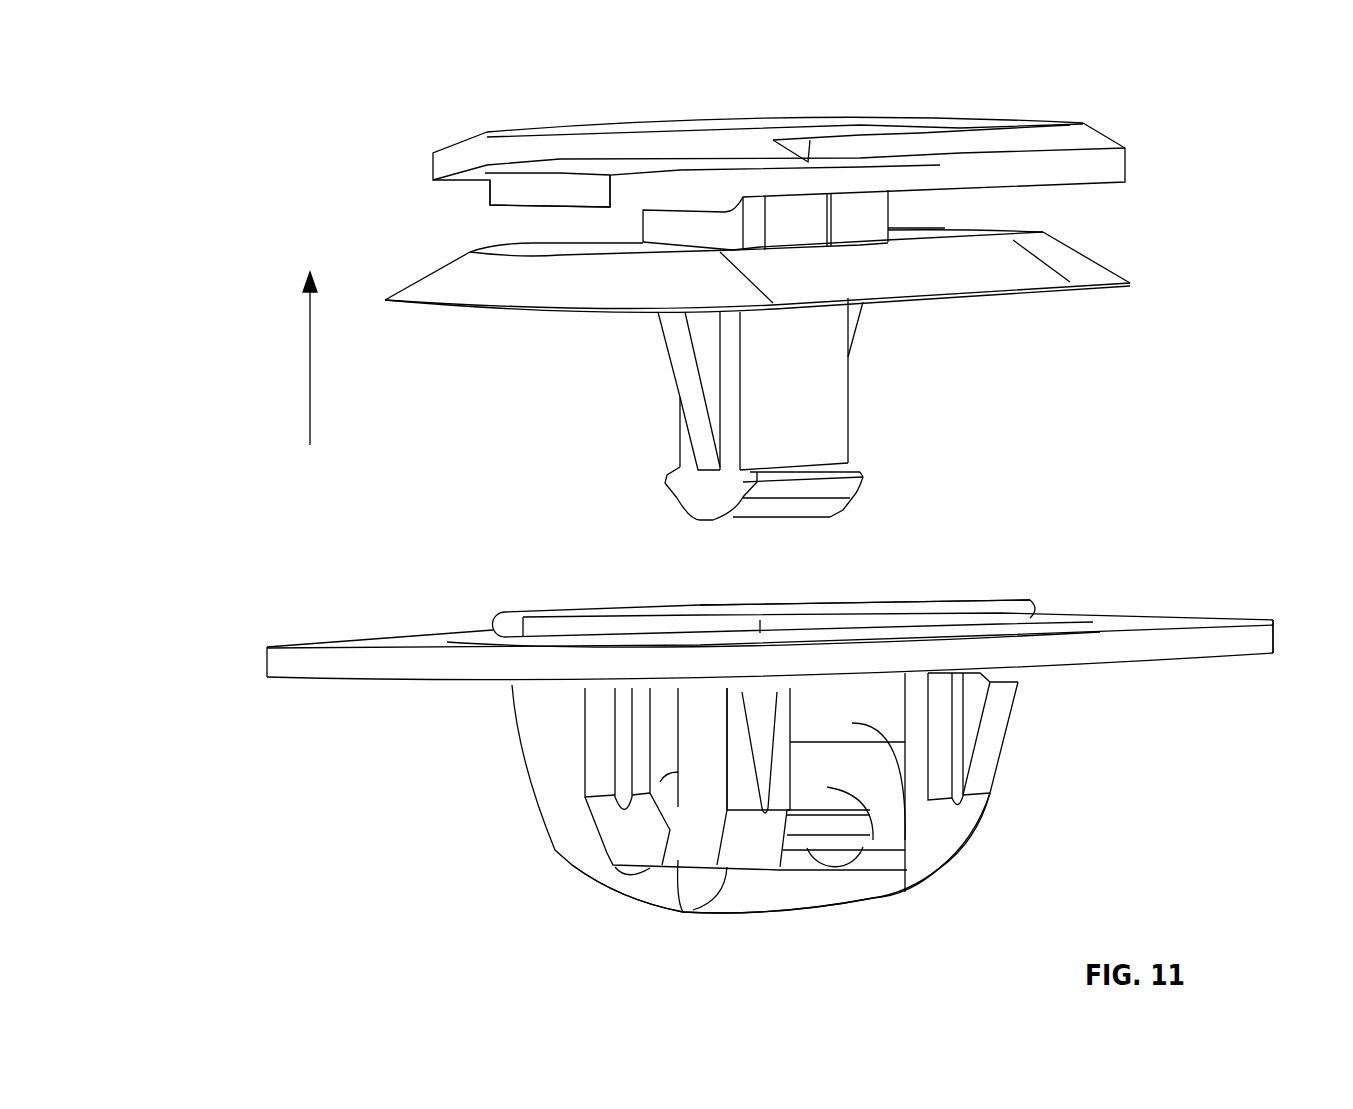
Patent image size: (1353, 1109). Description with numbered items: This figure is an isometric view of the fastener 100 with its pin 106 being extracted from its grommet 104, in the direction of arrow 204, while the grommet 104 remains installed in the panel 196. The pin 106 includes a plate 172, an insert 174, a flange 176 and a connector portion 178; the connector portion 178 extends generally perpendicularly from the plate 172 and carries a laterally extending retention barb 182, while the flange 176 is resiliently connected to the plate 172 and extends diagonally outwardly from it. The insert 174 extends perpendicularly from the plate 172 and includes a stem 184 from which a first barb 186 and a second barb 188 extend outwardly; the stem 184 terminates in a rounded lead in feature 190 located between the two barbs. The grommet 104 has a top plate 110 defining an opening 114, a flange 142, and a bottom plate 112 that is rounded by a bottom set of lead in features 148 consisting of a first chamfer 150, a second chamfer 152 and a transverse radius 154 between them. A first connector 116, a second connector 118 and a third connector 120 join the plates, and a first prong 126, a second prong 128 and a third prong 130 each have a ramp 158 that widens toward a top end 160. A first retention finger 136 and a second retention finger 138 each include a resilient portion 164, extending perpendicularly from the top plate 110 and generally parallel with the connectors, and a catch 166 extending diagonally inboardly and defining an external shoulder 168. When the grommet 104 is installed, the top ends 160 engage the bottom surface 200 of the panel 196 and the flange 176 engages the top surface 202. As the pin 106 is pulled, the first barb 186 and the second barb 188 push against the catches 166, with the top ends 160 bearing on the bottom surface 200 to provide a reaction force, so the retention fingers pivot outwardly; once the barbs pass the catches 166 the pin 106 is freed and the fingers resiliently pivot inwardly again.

The fastener 100 is at (268, 100).
The arrow 204 is at (305, 350).
The pin 106 is at (1113, 167).
The retention barb 182 is at (527, 190).
The connector portion 178 is at (805, 160).
The plate 172 is at (948, 233).
The flange 176 is at (1085, 278).
The insert 174 is at (820, 373).
The stem 184 is at (765, 387).
The second barb 188 is at (665, 483).
The lead in feature 190 is at (705, 500).
The first barb 186 is at (822, 470).
The bottom surface 200 is at (380, 685).
The top surface 202 is at (405, 640).
The panel 196 is at (1257, 640).
The opening 114 is at (805, 607).
The top plate 110 is at (850, 605).
The flange 142 is at (1017, 612).
The grommet 104 is at (973, 817).
The third prong 130 is at (537, 713).
The third connector 120 is at (640, 737).
The catch 166 is at (665, 768).
The top end 160 is at (725, 707).
The first connector 116 is at (780, 760).
The second retention finger 138 is at (667, 730).
The first retention finger 136 is at (887, 700).
The first prong 126 is at (712, 793).
The resilient portion 164 is at (907, 857).
The external shoulder 168 is at (870, 817).
The transverse radius 154 is at (773, 887).
The second prong 128 is at (1000, 700).
The second connector 118 is at (942, 738).
The ramp 158 is at (985, 780).
The bottom plate 112 is at (957, 837).
The second chamfer 152 is at (937, 873).
The first chamfer 150 is at (633, 883).
The bottom set of lead in features 148 is at (652, 934).